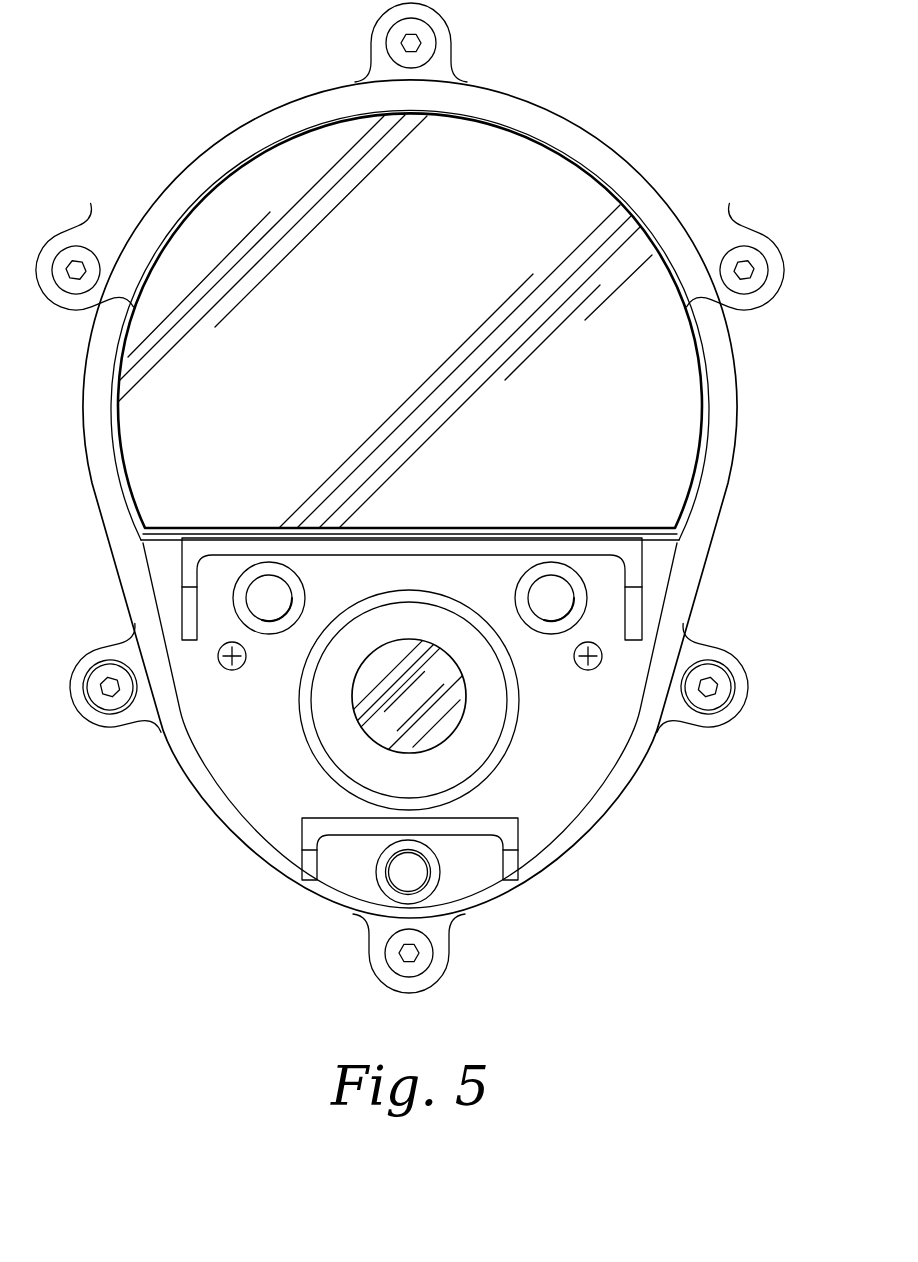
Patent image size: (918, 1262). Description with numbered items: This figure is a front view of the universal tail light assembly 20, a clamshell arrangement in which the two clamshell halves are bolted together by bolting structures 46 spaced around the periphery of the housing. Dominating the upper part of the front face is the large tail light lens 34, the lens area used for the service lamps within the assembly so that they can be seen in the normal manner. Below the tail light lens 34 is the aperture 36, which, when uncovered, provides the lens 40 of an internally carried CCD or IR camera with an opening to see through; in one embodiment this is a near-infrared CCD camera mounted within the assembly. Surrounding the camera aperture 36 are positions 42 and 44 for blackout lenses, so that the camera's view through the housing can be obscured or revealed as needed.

The universal tail light assembly 20 is at (575, 103).
The tail light lens 34 is at (419, 333).
The aperture 36 is at (477, 740).
The lens 40 is at (362, 727).
The position for blackout lens 42 is at (267, 583).
The position for blackout lens 44 is at (418, 872).
The bolting structure 46 is at (396, 49).